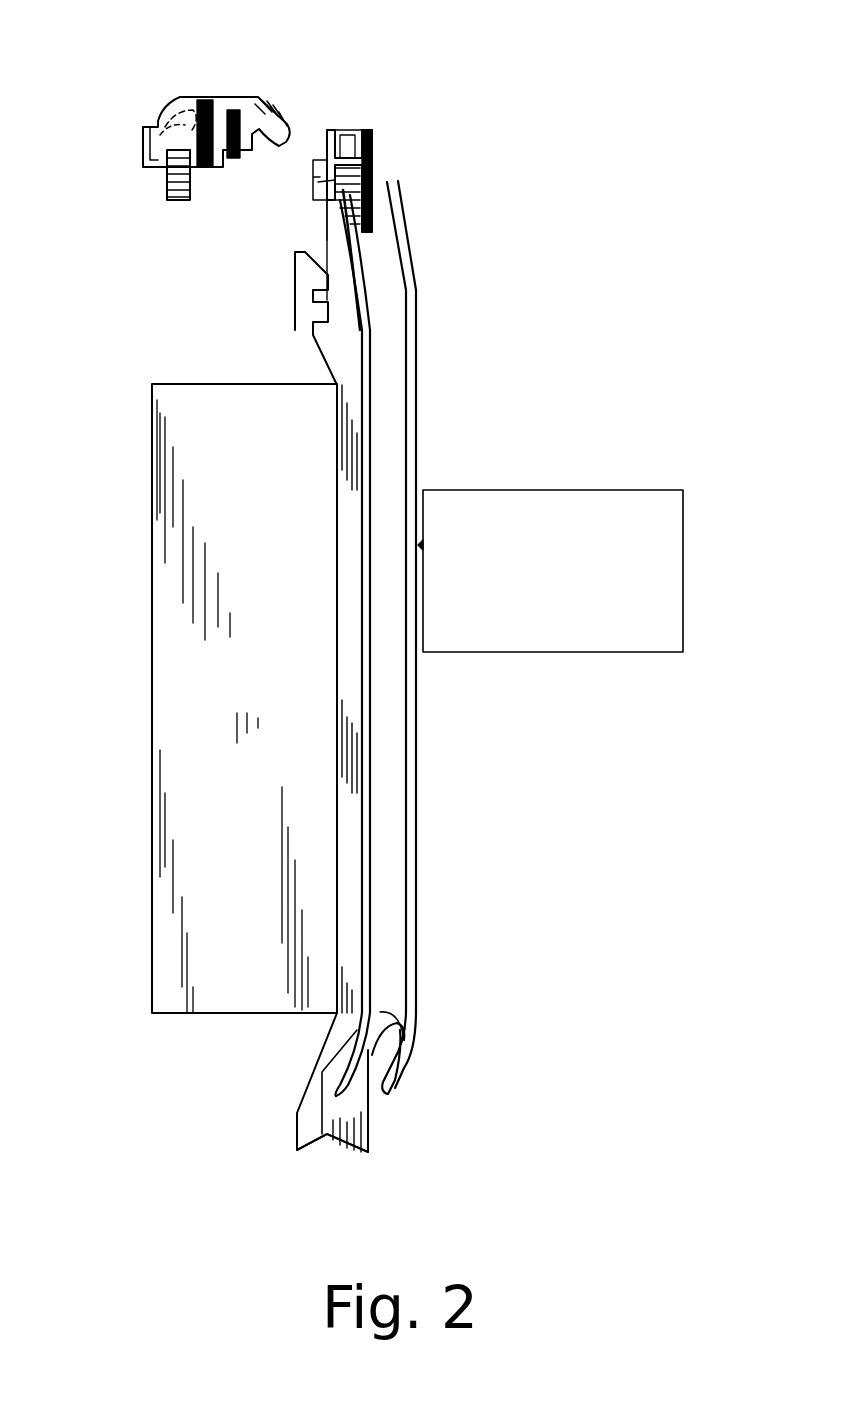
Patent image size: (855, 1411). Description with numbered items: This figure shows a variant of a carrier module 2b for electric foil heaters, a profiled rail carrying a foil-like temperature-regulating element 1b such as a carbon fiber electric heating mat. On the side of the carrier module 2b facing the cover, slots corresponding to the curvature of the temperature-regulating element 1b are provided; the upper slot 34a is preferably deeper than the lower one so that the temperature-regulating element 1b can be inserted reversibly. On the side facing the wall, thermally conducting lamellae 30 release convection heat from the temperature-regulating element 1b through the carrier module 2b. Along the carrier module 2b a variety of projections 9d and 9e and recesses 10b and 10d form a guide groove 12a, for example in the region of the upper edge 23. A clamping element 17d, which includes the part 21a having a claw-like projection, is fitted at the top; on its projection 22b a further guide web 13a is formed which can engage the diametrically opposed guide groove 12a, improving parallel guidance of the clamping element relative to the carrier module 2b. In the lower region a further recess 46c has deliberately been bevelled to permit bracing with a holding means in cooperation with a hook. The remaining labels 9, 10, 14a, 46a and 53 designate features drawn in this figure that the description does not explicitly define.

The temperature-regulating element 1b is at (420, 484).
The carrier module 2b is at (325, 350).
The bracket 9 is at (287, 276).
The projection 9d is at (380, 161).
The projection 9e is at (293, 1130).
The hook portion 10 is at (378, 1017).
The recess 10b is at (348, 120).
The recess 10d is at (322, 1178).
The guide groove 12a is at (370, 135).
The guide web 13a is at (238, 160).
The clamp member 14a is at (128, 168).
The clamping element 17d is at (258, 97).
The part having a claw-like projection 21a is at (210, 107).
The projection 22b is at (270, 120).
The upper edge 23 is at (343, 176).
The thermally conducting lamellae 30 is at (266, 697).
The upper slot 34a is at (378, 181).
The upper engagement portion 46a is at (323, 237).
The further recess 46c is at (340, 1152).
The notch 53 is at (300, 302).